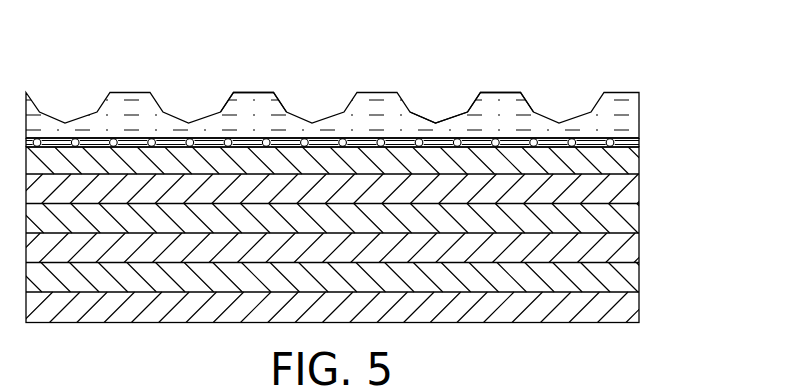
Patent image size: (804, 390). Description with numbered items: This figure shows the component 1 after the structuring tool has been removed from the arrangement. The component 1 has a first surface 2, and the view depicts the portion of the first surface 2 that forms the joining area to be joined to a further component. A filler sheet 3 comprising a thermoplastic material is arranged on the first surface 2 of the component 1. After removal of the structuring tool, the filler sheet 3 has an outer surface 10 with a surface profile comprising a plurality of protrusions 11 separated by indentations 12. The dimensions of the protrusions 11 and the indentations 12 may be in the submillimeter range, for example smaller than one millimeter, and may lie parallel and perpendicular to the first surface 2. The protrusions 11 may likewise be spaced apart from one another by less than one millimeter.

The component 1 is at (622, 252).
The first surface 2 is at (615, 131).
The filler sheet 3 is at (625, 110).
The outer surface 10 is at (265, 90).
The protrusions 11 is at (502, 90).
The indentations 12 is at (437, 122).